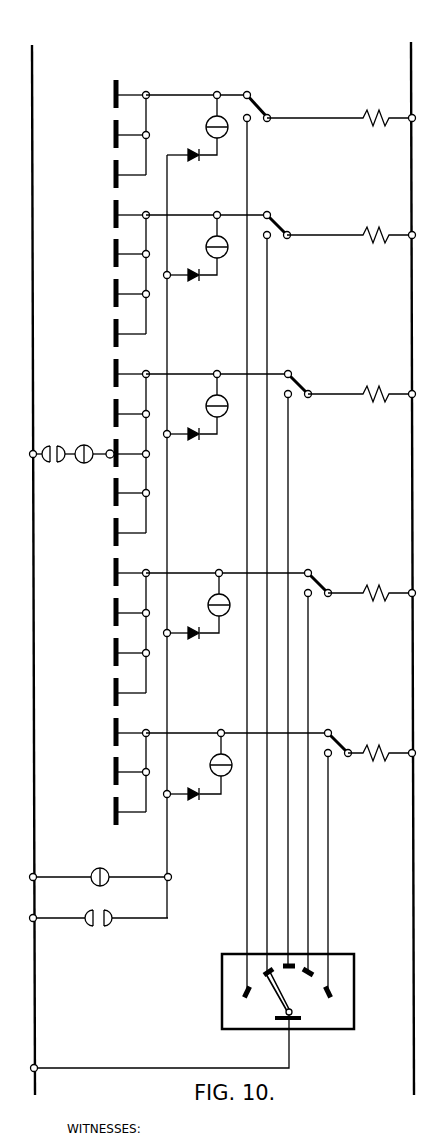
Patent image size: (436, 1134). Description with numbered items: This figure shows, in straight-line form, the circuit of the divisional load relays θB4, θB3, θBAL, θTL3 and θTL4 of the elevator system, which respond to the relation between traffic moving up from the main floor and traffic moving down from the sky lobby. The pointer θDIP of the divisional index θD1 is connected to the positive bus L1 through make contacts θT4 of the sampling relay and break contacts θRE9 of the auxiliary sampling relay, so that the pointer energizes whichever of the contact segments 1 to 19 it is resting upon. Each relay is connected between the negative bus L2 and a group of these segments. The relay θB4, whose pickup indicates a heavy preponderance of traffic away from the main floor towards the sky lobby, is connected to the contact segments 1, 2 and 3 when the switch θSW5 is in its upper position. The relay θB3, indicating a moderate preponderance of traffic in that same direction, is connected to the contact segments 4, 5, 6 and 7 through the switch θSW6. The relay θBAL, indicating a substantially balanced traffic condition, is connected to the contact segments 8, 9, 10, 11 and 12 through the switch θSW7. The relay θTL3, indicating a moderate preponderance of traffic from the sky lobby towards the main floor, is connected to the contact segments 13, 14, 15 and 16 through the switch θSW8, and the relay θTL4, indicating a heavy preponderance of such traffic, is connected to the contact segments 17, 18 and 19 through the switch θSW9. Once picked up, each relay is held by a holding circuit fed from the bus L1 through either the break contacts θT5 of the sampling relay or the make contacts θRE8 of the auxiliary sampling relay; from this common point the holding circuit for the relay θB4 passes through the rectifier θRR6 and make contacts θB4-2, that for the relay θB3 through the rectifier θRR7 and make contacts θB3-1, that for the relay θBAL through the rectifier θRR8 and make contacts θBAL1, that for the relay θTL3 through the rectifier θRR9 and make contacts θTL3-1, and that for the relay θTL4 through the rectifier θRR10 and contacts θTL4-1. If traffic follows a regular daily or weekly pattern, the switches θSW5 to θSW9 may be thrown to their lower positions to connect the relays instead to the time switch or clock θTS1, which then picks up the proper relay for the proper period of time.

The positive bus L1 is at (37, 60).
The negative bus L2 is at (410, 56).
The divisional index D1 is at (174, 66).
The contact segment 1 is at (131, 93).
The contact segment 2 is at (131, 133).
The contact segment 3 is at (131, 173).
The contact segment 4 is at (131, 213).
The contact segment 5 is at (131, 252).
The contact segment 6 is at (131, 292).
The contact segment 7 is at (131, 332).
The contact segment 8 is at (131, 372).
The contact segment 9 is at (131, 412).
The contact segment 10 is at (131, 452).
The contact segment 11 is at (131, 491).
The contact segment 12 is at (131, 531).
The contact segment 13 is at (131, 571).
The contact segment 14 is at (131, 611).
The contact segment 15 is at (131, 651).
The contact segment 16 is at (131, 691).
The contact segment 17 is at (131, 731).
The contact segment 18 is at (131, 770).
The contact segment 19 is at (131, 810).
The make contacts B4-2 is at (207, 123).
The rectifier RR6 is at (187, 160).
The switch SW5 is at (259, 103).
The divisional load relay B4 is at (383, 100).
The make contacts B3-1 is at (207, 243).
The rectifier RR7 is at (186, 282).
The switch SW6 is at (283, 209).
The divisional load relay B3 is at (378, 227).
The make contacts BAL1 is at (208, 403).
The rectifier RR8 is at (186, 447).
The switch SW7 is at (297, 380).
The divisional load relay BAL is at (378, 387).
The make contacts T4 is at (51, 445).
The break contacts RE9 is at (88, 466).
The pointer DIP is at (105, 450).
The make contacts TL3-1 is at (224, 619).
The rectifier RR9 is at (197, 625).
The switch SW8 is at (316, 581).
The divisional load relay TL3 is at (379, 589).
The contacts TL4-1 is at (212, 756).
The rectifier RR10 is at (194, 801).
The switch SW9 is at (338, 742).
The divisional load relay TL4 is at (381, 749).
The break contacts T5 is at (92, 870).
The make contacts RE8 is at (90, 930).
The time switch TS1 is at (221, 1010).